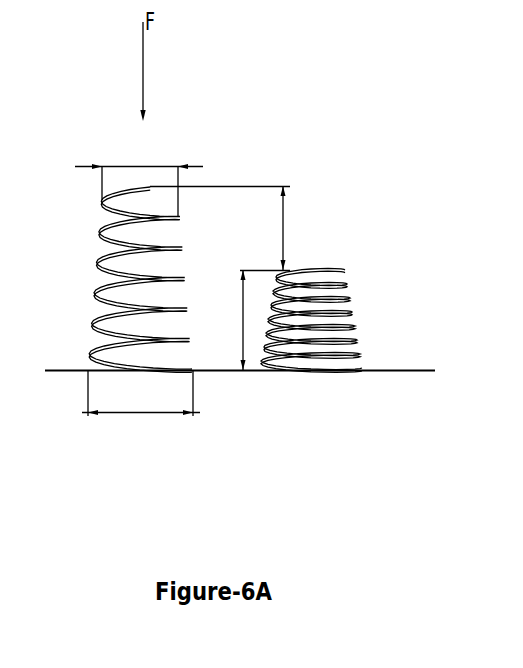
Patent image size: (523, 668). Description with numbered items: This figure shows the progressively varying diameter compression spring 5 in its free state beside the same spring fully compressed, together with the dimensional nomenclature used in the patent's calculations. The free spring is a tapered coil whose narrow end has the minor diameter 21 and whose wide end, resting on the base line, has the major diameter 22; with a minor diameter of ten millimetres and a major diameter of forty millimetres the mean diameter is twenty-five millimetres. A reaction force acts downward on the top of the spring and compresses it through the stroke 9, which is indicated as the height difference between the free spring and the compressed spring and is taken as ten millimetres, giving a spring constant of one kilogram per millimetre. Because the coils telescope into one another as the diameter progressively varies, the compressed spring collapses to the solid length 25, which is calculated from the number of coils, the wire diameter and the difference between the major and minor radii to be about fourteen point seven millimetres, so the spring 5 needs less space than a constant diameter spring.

The progressively varying diameter compression spring 5 is at (180, 244).
The stroke 9 is at (294, 229).
The minor diameter 21 is at (139, 176).
The major diameter 22 is at (141, 393).
The solid length of varying diameter spring 25 is at (287, 320).